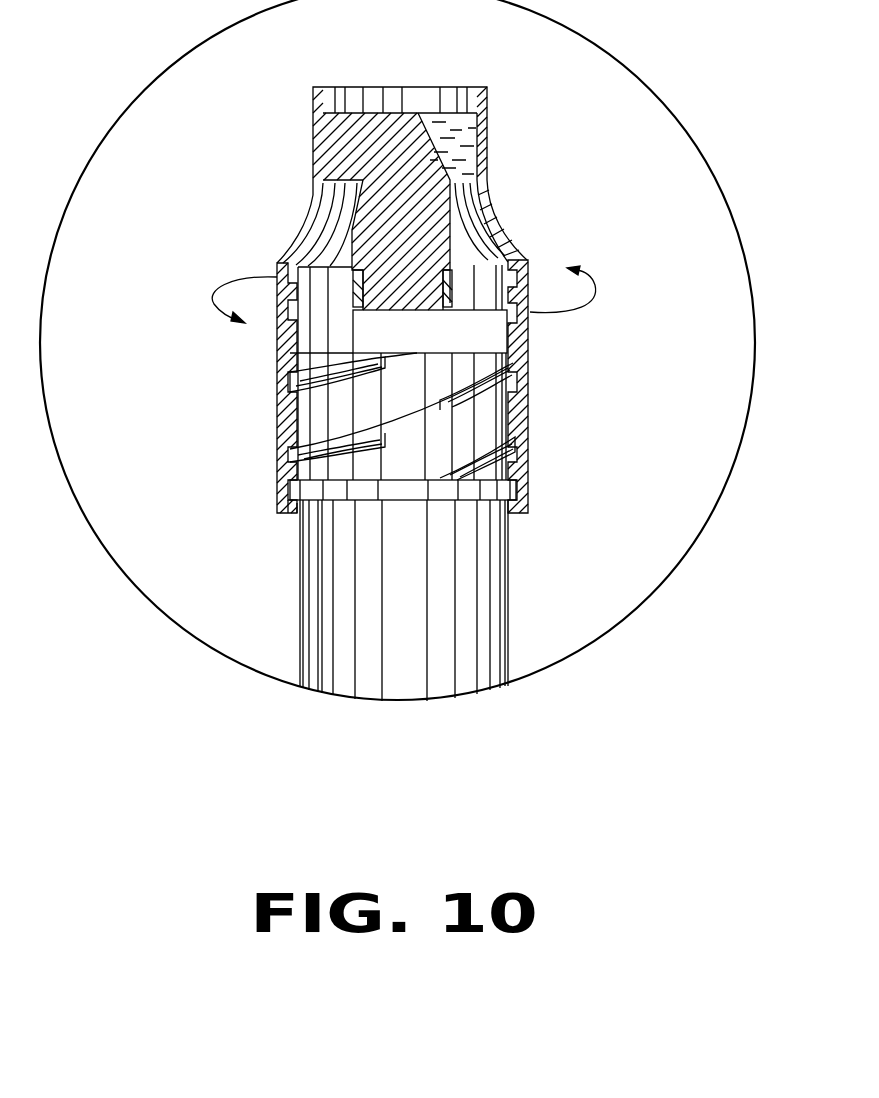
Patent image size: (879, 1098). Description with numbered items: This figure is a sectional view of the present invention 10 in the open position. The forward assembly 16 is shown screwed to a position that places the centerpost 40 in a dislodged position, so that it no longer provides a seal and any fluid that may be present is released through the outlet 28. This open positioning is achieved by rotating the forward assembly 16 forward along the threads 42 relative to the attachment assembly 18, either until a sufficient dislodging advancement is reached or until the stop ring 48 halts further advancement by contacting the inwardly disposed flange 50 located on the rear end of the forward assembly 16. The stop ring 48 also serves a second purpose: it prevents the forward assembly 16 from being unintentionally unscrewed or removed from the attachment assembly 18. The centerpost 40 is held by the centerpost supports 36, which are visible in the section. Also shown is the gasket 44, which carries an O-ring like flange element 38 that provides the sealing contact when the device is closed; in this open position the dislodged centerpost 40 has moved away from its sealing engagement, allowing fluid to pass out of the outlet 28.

The present invention 10 is at (174, 333).
The forward assembly 16 is at (282, 280).
The attachment assembly 18 is at (500, 575).
The outlet 28 is at (340, 92).
The centerpost supports 36 is at (360, 137).
The O-ring like flange element 38 is at (470, 283).
The centerpost 40 is at (420, 223).
The threads 42 is at (512, 393).
The gasket 44 is at (470, 283).
The stop ring 48 is at (290, 449).
The inwardly disposed flange 50 is at (296, 505).